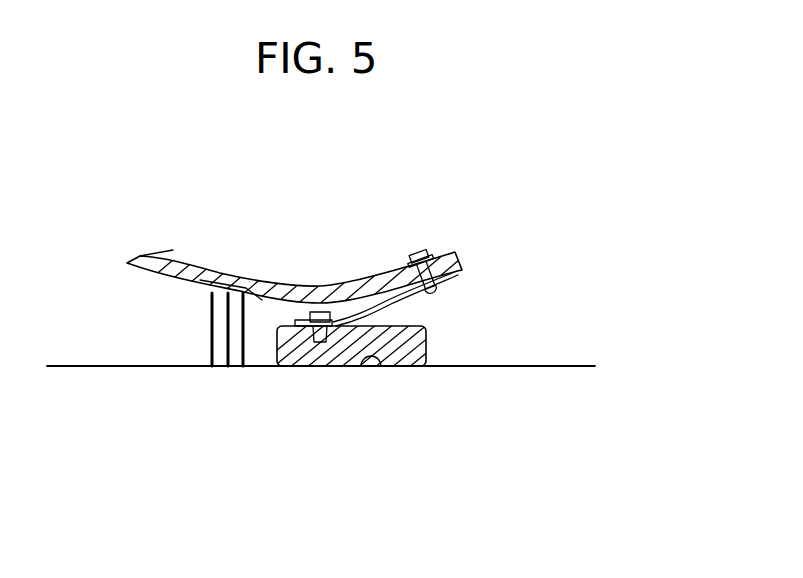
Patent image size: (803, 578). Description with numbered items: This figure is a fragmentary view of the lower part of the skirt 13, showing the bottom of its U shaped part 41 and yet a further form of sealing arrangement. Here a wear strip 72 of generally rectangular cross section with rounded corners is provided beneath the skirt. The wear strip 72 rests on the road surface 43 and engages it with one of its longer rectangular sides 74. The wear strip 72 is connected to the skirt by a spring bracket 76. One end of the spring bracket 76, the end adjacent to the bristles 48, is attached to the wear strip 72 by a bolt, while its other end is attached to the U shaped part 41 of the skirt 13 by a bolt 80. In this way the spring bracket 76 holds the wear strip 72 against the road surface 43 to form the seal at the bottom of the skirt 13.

The skirt 13 is at (315, 285).
The U shaped part 41 is at (283, 290).
The road surface 43 is at (500, 370).
The bristles 48 is at (210, 335).
The wear strip 72 is at (315, 348).
The longer rectangular side 74 is at (366, 357).
The spring bracket 76 is at (367, 311).
The bolt 80 is at (432, 287).